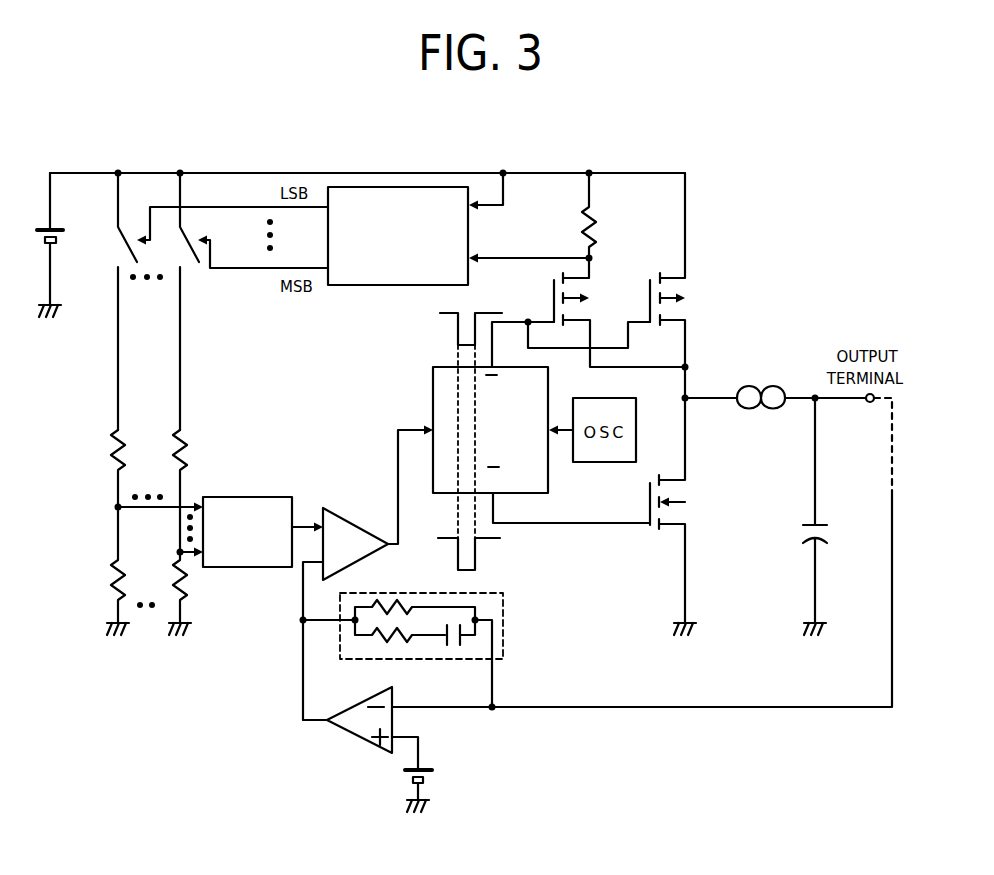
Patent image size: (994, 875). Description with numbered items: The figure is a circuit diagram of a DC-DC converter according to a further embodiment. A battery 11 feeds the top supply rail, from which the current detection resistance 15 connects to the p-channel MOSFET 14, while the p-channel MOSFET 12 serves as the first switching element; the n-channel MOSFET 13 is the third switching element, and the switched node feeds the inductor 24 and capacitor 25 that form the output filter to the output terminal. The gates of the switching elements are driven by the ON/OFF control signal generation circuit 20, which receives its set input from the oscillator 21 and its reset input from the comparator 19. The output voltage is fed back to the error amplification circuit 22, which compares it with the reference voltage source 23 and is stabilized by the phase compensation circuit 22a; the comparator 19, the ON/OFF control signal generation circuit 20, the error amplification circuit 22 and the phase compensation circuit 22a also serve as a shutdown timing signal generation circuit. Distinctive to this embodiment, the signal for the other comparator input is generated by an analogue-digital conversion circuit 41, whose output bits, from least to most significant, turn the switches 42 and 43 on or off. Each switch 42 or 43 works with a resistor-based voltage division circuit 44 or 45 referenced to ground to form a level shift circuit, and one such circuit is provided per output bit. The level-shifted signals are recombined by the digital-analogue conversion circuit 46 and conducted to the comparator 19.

The battery (power supply) 11 is at (62, 240).
The p-channel MOSFET 12 is at (650, 270).
The n-channel MOSFET 13 is at (645, 491).
The p-channel MOSFET 14 is at (548, 302).
The current detection resistance 15 is at (580, 212).
The comparator 19 is at (340, 516).
The ON/OFF control signal generation circuit 20 is at (433, 388).
The oscillator 21 is at (583, 397).
The error amplification circuit 22 is at (387, 687).
The phase compensation circuit 22a is at (505, 628).
The reference voltage source 23 is at (432, 773).
The inductor 24 is at (762, 386).
The capacitor 25 is at (803, 523).
The analogue-digital conversion circuit 41 is at (410, 285).
The switch 42 is at (115, 250).
The switch 43 is at (185, 265).
The voltage division circuit 44 is at (116, 472).
The voltage division circuit 45 is at (177, 472).
The digital-analogue conversion circuit 46 is at (255, 497).